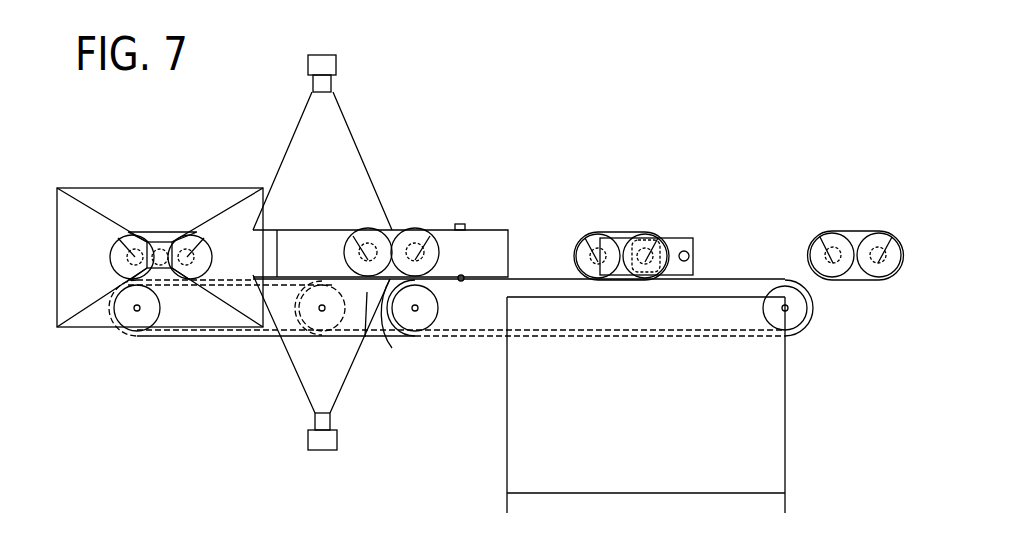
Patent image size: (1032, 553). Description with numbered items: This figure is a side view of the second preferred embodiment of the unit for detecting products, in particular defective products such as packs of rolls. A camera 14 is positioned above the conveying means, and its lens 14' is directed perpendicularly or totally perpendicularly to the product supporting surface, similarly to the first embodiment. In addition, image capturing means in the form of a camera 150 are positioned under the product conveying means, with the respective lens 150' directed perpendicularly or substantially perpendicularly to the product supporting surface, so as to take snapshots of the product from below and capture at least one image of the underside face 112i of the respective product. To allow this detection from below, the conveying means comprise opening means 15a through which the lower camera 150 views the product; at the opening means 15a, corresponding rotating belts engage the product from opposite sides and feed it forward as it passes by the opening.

The camera 14 is at (372, 45).
The lens 14' is at (347, 149).
The camera 150 is at (355, 469).
The lens 150' is at (296, 368).
The opening means 15a is at (367, 292).
The underside face 112i is at (392, 348).